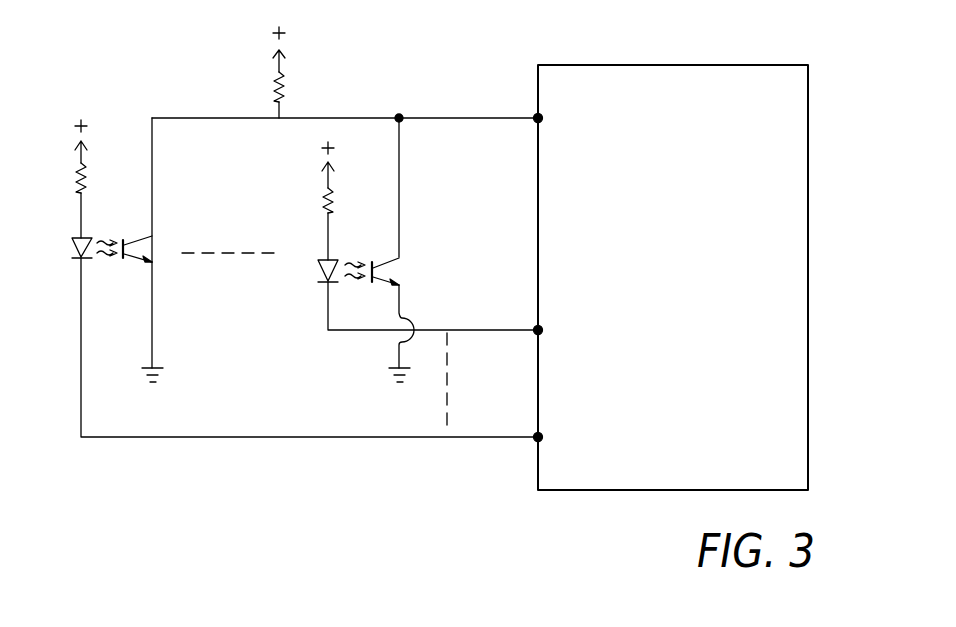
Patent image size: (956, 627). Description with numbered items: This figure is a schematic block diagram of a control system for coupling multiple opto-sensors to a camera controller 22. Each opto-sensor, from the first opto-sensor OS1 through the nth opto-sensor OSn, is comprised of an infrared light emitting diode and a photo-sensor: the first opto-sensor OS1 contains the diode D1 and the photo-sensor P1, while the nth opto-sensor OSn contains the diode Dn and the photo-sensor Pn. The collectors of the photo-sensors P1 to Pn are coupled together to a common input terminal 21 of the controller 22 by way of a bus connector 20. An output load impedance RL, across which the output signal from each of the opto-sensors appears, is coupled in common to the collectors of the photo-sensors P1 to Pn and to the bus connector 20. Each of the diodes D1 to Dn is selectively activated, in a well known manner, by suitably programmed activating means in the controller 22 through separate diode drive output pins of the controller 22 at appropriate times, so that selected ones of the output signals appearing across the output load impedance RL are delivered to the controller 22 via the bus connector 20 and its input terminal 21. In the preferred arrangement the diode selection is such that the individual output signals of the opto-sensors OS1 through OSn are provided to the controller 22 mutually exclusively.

The bus connector 20 is at (421, 116).
The common input terminal 21 is at (542, 117).
The camera controller 22 is at (809, 128).
The output load impedance RL is at (297, 72).
The infrared light emitting diode D1 is at (285, 278).
The photo-sensor P1 is at (137, 247).
The opto-sensor OS1 is at (195, 182).
The infrared light emitting diode Dn is at (320, 270).
The photo-sensor Pn is at (385, 269).
The opto-sensor OSn is at (441, 182).